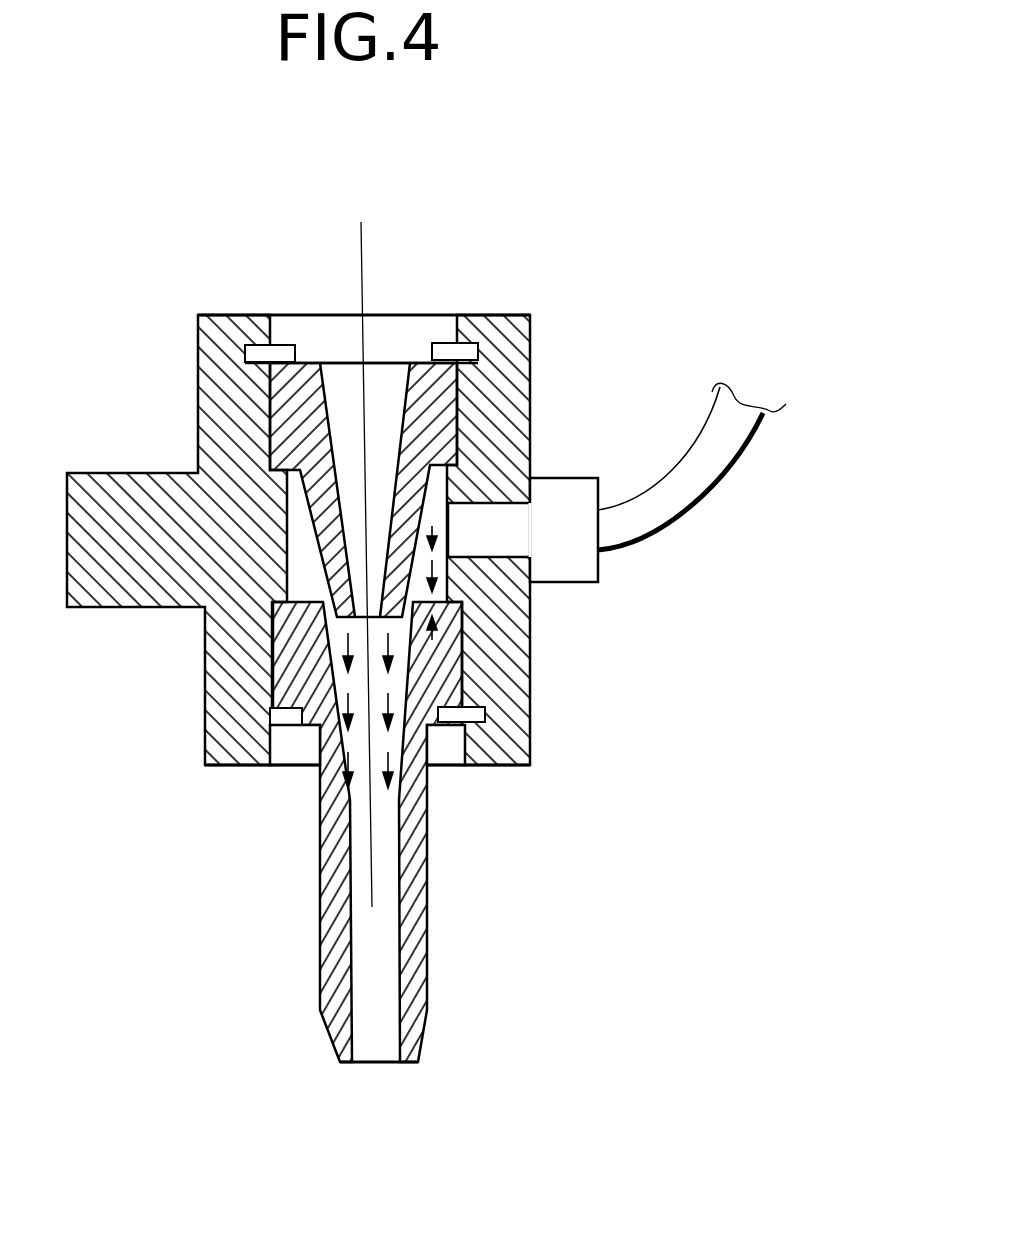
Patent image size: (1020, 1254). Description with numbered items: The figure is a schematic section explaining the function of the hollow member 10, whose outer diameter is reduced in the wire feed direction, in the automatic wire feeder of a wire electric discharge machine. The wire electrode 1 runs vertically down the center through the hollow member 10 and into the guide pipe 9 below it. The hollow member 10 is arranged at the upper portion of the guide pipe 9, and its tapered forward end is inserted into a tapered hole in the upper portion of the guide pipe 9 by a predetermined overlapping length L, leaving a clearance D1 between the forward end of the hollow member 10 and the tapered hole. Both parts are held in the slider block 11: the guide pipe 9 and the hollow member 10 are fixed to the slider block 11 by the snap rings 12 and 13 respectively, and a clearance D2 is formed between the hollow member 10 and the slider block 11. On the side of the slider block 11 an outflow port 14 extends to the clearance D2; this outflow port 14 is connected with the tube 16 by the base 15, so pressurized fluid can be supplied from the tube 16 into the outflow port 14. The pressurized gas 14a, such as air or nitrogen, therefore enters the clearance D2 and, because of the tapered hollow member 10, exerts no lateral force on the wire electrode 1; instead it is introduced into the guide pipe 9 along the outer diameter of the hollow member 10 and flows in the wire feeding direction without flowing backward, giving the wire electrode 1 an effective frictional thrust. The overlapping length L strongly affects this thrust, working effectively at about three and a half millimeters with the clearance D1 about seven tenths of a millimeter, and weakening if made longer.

The wire electrode 1 is at (361, 252).
The guide pipe 9 is at (427, 937).
The hollow member 10 is at (420, 372).
The slider block 11 is at (120, 487).
The snap ring 12 is at (483, 765).
The snap ring 13 is at (456, 348).
The outflow port 14 is at (512, 547).
The pressurized gas 14a is at (505, 525).
The base 15 is at (570, 497).
The tube 16 is at (735, 440).
The clearance D1 is at (333, 632).
The clearance D2 is at (302, 552).
The overlapping length L is at (462, 600).